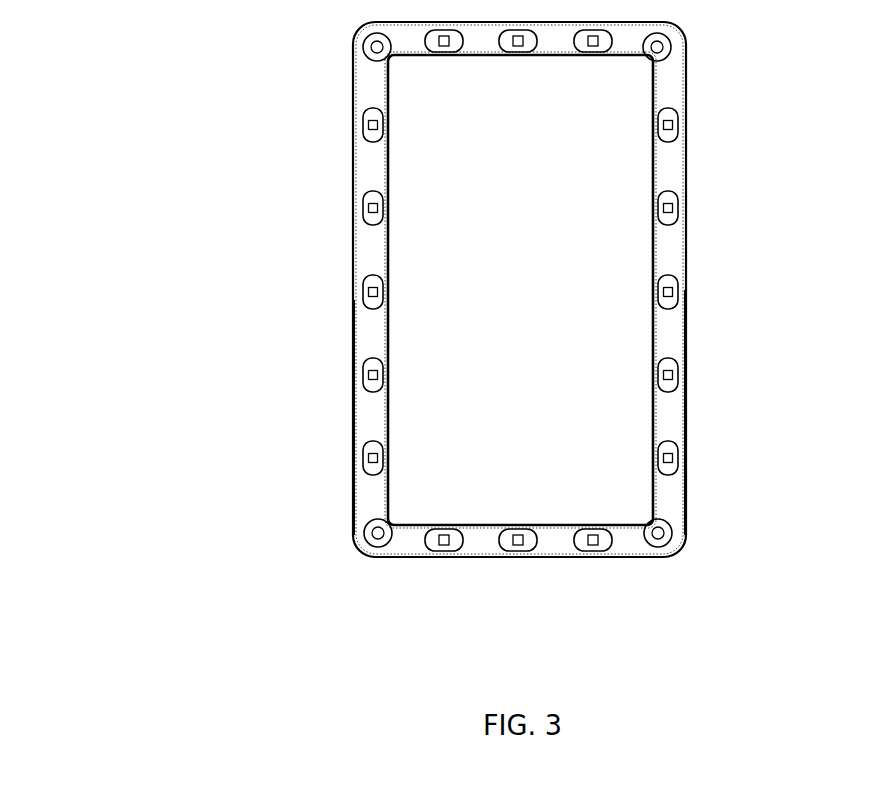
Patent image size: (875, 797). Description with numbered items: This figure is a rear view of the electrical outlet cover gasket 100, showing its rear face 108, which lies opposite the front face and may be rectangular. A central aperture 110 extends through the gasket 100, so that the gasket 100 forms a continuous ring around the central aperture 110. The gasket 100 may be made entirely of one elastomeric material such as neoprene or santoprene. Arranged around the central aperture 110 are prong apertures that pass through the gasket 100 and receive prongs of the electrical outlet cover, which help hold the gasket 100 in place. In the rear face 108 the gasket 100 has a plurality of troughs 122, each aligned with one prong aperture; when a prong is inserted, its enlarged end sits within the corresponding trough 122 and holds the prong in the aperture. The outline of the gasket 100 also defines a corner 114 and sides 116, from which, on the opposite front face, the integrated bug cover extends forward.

The gasket 100 is at (280, 167).
The rear face 108 is at (667, 328).
The central aperture 110 is at (565, 258).
The corner 114 is at (363, 552).
The side 116 is at (353, 227).
The trough 122 is at (367, 312).